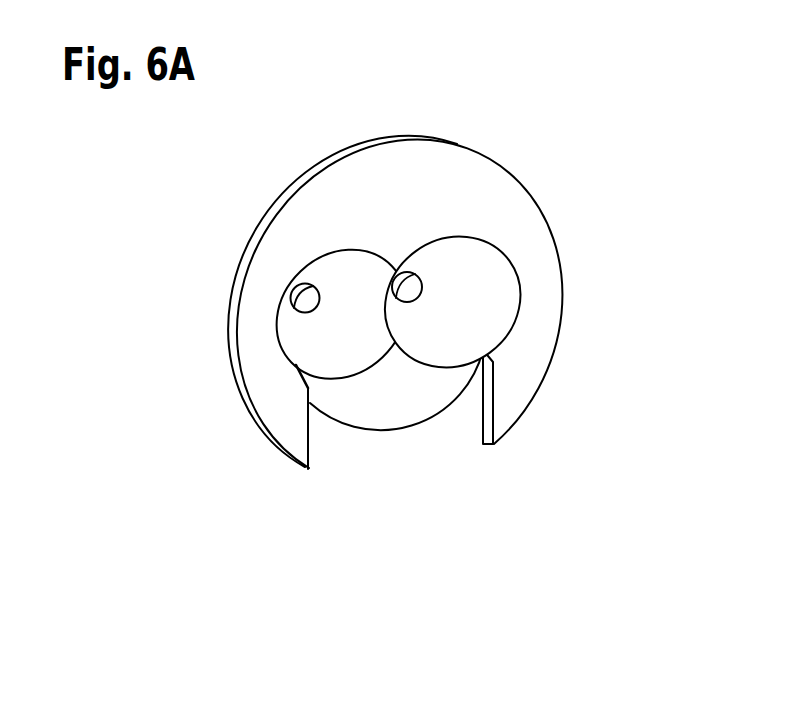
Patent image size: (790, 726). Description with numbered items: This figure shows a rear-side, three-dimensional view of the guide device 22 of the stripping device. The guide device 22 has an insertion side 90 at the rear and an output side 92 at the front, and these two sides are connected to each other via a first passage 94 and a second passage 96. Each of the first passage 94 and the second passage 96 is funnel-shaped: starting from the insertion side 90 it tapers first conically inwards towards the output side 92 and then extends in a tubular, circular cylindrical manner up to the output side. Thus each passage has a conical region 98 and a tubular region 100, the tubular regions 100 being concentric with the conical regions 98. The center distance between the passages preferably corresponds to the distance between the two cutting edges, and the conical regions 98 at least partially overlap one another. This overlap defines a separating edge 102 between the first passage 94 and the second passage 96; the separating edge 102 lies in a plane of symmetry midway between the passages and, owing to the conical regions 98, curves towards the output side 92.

The guide device 22 is at (524, 176).
The insertion side 90 is at (529, 253).
The output side 92 is at (482, 423).
The first passage 94 is at (433, 326).
The second passage 96 is at (348, 343).
The conical region 98 is at (328, 324).
The tubular region 100 is at (302, 295).
The separating edge 102 is at (381, 310).